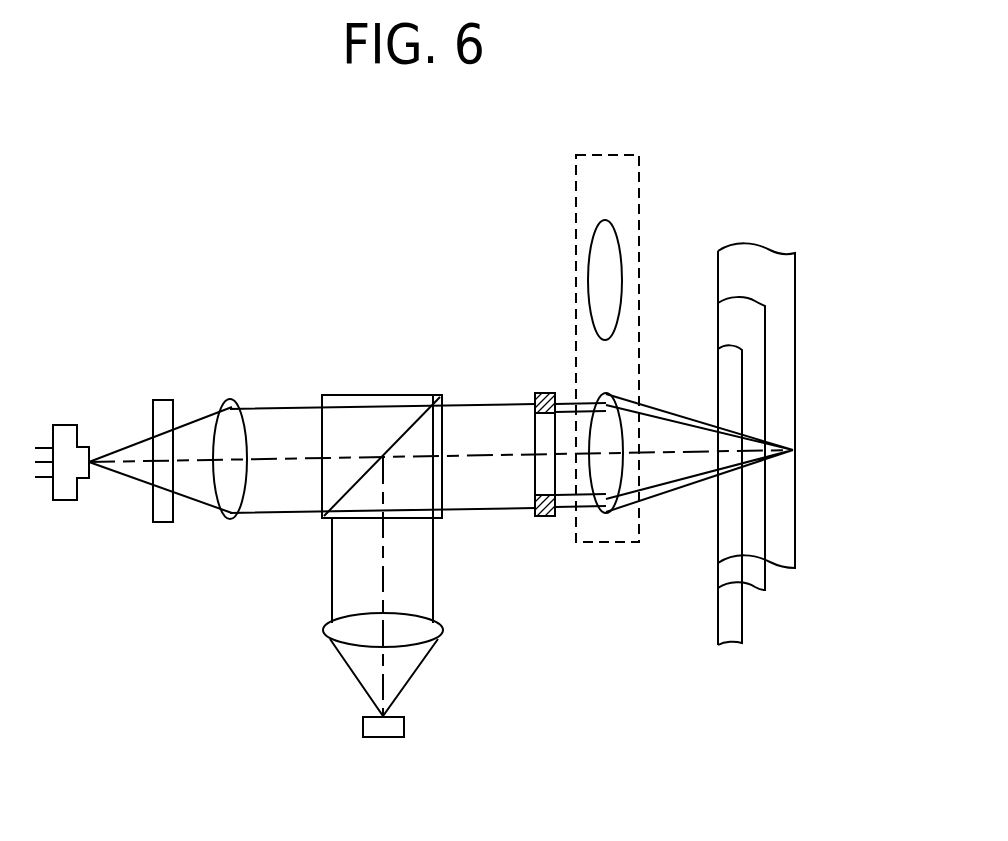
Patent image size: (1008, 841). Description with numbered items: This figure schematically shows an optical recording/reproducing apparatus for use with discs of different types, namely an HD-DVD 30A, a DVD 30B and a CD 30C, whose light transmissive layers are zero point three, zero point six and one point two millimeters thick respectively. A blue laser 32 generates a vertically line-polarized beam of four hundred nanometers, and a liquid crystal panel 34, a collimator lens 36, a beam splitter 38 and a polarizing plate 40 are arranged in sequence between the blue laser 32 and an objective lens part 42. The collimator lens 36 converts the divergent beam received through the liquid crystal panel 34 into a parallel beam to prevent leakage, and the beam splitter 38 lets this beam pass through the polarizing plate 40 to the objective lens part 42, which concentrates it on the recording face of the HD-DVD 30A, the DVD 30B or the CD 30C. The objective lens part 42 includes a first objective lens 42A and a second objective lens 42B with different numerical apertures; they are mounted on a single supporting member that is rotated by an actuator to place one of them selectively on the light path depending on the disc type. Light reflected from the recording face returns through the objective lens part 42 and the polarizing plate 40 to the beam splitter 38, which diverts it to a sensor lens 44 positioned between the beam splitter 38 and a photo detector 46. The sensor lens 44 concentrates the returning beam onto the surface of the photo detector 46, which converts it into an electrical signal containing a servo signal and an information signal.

The HD-DVD 30A is at (730, 617).
The DVD 30B is at (757, 418).
The CD 30C is at (786, 348).
The blue laser 32 is at (67, 428).
The liquid crystal panel 34 is at (163, 412).
The collimator lens 36 is at (235, 406).
The beam splitter 38 is at (440, 398).
The polarizing plate 40 is at (548, 393).
The objective lens part 42 is at (640, 243).
The first objective lens 42A is at (605, 230).
The second objective lens 42B is at (606, 398).
The sensor lens 44 is at (443, 632).
The photo detector 46 is at (395, 734).